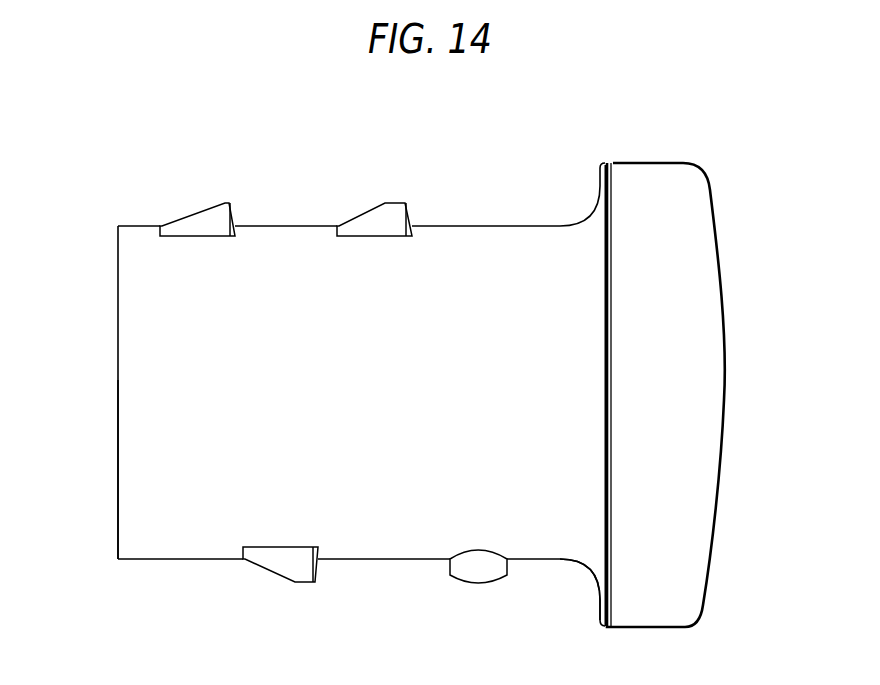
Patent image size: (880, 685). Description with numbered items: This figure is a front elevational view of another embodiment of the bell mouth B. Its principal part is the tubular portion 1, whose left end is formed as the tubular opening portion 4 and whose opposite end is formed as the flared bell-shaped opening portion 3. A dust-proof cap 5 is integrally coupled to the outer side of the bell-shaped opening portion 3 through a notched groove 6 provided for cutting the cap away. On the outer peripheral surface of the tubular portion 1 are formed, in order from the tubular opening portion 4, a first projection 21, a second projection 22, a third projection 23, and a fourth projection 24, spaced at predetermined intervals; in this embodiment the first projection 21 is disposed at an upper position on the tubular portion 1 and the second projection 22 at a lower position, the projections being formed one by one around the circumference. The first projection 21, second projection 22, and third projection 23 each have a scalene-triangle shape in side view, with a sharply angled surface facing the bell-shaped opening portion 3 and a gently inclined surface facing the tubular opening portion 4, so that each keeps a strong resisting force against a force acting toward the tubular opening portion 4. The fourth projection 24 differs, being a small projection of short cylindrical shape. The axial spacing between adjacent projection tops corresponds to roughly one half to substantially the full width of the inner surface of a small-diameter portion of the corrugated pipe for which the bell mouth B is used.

The tubular portion 1 is at (527, 226).
The bell-shaped opening portion 3 is at (586, 562).
The tubular opening portion 4 is at (141, 506).
The dust-proof cap 5 is at (705, 290).
The notched groove 6 is at (607, 593).
The first projection 21 is at (215, 217).
The second projection 22 is at (298, 567).
The third projection 23 is at (392, 218).
The fourth projection 24 is at (476, 568).
The bell mouth B is at (648, 137).